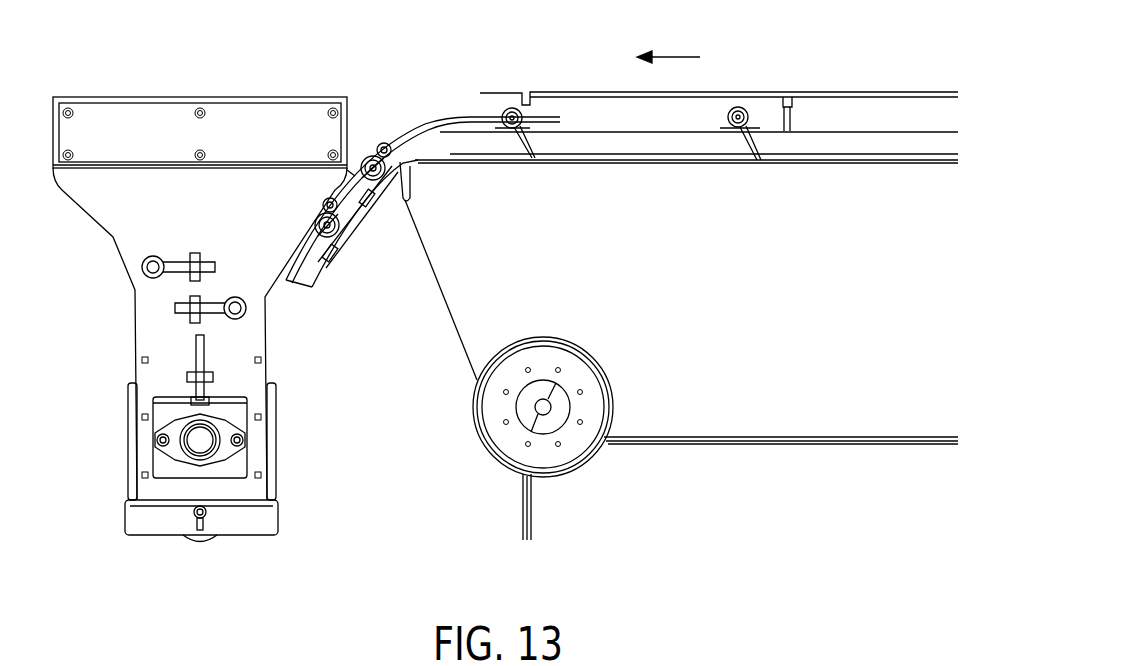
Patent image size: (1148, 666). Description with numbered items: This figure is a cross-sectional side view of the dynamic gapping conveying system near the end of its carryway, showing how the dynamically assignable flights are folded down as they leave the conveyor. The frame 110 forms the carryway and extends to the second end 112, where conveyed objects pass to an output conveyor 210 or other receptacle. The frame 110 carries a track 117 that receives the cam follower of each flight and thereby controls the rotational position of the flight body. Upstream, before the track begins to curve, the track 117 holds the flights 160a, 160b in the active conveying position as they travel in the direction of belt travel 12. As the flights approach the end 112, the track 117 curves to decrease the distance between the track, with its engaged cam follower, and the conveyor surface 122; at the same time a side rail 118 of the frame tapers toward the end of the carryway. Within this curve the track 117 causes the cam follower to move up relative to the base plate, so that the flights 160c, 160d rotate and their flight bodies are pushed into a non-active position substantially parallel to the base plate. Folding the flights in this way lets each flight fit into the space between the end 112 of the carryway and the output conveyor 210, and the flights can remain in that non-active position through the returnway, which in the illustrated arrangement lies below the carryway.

The output conveyor 210 is at (177, 163).
The flight 160d is at (310, 205).
The flight 160c is at (370, 133).
The second end 112 is at (408, 72).
The track 117 is at (443, 122).
The flight 160b is at (520, 82).
The frame 110 is at (590, 92).
The direction of belt travel 12 is at (668, 43).
The flight 160a is at (742, 88).
The conveyor surface 122 is at (596, 150).
The side rail 118 is at (663, 145).